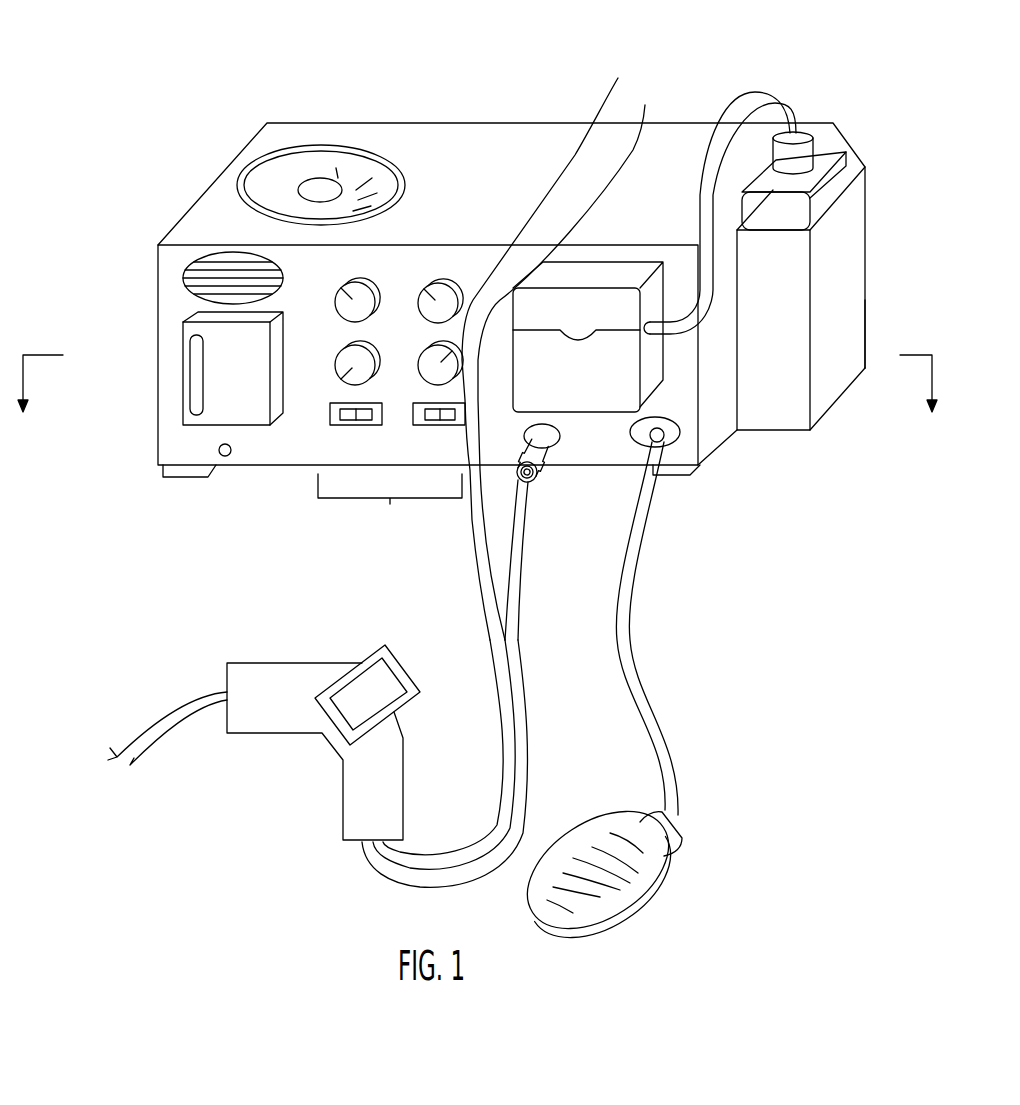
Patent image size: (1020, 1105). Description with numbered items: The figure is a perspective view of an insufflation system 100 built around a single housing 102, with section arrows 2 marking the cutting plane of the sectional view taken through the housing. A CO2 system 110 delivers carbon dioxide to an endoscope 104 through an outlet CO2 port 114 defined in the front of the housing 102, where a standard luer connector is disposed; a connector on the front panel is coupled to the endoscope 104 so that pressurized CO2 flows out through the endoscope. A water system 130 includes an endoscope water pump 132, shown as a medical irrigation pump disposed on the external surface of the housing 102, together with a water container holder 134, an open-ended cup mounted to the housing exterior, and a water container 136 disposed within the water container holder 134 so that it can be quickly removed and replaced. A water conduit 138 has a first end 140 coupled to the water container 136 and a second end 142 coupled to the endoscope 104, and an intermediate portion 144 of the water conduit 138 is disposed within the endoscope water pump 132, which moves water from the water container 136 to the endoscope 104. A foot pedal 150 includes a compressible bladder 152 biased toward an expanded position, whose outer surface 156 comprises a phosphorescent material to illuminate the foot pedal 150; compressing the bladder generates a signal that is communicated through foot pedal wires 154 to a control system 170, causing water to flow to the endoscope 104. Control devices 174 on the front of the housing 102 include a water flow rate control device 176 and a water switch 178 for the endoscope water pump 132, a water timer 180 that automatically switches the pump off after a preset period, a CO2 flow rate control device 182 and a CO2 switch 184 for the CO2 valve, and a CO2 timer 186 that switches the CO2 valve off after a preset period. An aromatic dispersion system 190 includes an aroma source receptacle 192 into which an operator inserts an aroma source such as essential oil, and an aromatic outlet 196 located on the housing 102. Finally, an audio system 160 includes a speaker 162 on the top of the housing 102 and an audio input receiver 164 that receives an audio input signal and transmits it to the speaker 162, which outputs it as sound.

The insufflation system 100 is at (213, 92).
The housing 102 is at (433, 143).
The endoscope 104 is at (283, 734).
The CO2 system 110 is at (535, 488).
The outlet CO2 port 114 is at (555, 442).
The water system 130 is at (799, 444).
The endoscope water pump 132 is at (614, 395).
The water container holder 134 is at (836, 362).
The water container 136 is at (848, 158).
The water conduit 138 is at (745, 105).
The first end 140 is at (803, 128).
The second end 142 is at (393, 850).
The intermediate portion 144 is at (652, 335).
The foot pedal 150 is at (728, 889).
The compressible bladder 152 is at (570, 940).
The foot pedal wires 154 is at (630, 630).
The outer surface 156 is at (617, 900).
The audio system 160 is at (238, 165).
The speaker 162 is at (299, 150).
The audio input receiver 164 is at (218, 450).
The control system 170 is at (333, 427).
The control devices 174 is at (391, 473).
The water flow rate control device 176 is at (552, 342).
The water switch 178 is at (570, 356).
The water timer 180 is at (445, 283).
The CO2 flow rate control device 182 is at (343, 379).
The CO2 switch 184 is at (382, 438).
The CO2 timer 186 is at (338, 314).
The aromatic dispersion system 190 is at (180, 400).
The aroma source receptacle 192 is at (190, 358).
The aromatic outlet 196 is at (187, 282).
The section line 2- 2 is at (478, 403).